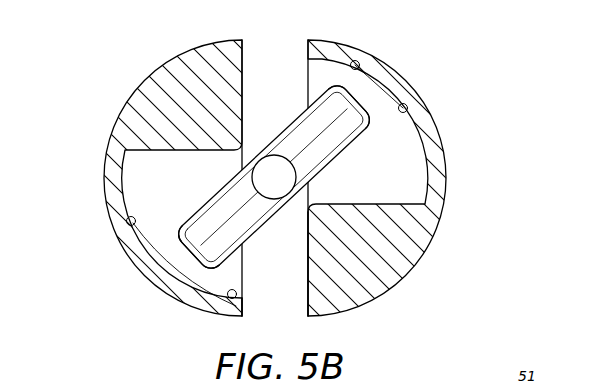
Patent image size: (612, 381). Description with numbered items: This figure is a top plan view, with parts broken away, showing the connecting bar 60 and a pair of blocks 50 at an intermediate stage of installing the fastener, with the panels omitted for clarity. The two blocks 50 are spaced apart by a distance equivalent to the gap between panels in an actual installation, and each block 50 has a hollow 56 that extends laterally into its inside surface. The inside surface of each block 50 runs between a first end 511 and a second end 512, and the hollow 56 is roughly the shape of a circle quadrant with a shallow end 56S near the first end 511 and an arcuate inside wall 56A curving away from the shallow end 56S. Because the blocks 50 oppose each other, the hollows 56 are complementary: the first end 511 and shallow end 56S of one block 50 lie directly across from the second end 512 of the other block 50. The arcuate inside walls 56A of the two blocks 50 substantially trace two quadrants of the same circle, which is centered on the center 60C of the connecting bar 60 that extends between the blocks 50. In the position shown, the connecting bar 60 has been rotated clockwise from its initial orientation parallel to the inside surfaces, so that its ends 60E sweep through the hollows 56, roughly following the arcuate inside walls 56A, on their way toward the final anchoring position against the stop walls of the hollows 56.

The block 50 is at (173, 298).
The hollow 56 is at (140, 165).
The arcuate inside wall 56A is at (127, 223).
The shallow end 56S is at (238, 293).
The first end 511 is at (308, 38).
The second end 512 is at (238, 38).
The connecting bar 60 is at (300, 112).
The ends 60E is at (190, 283).
The center 60C is at (292, 198).